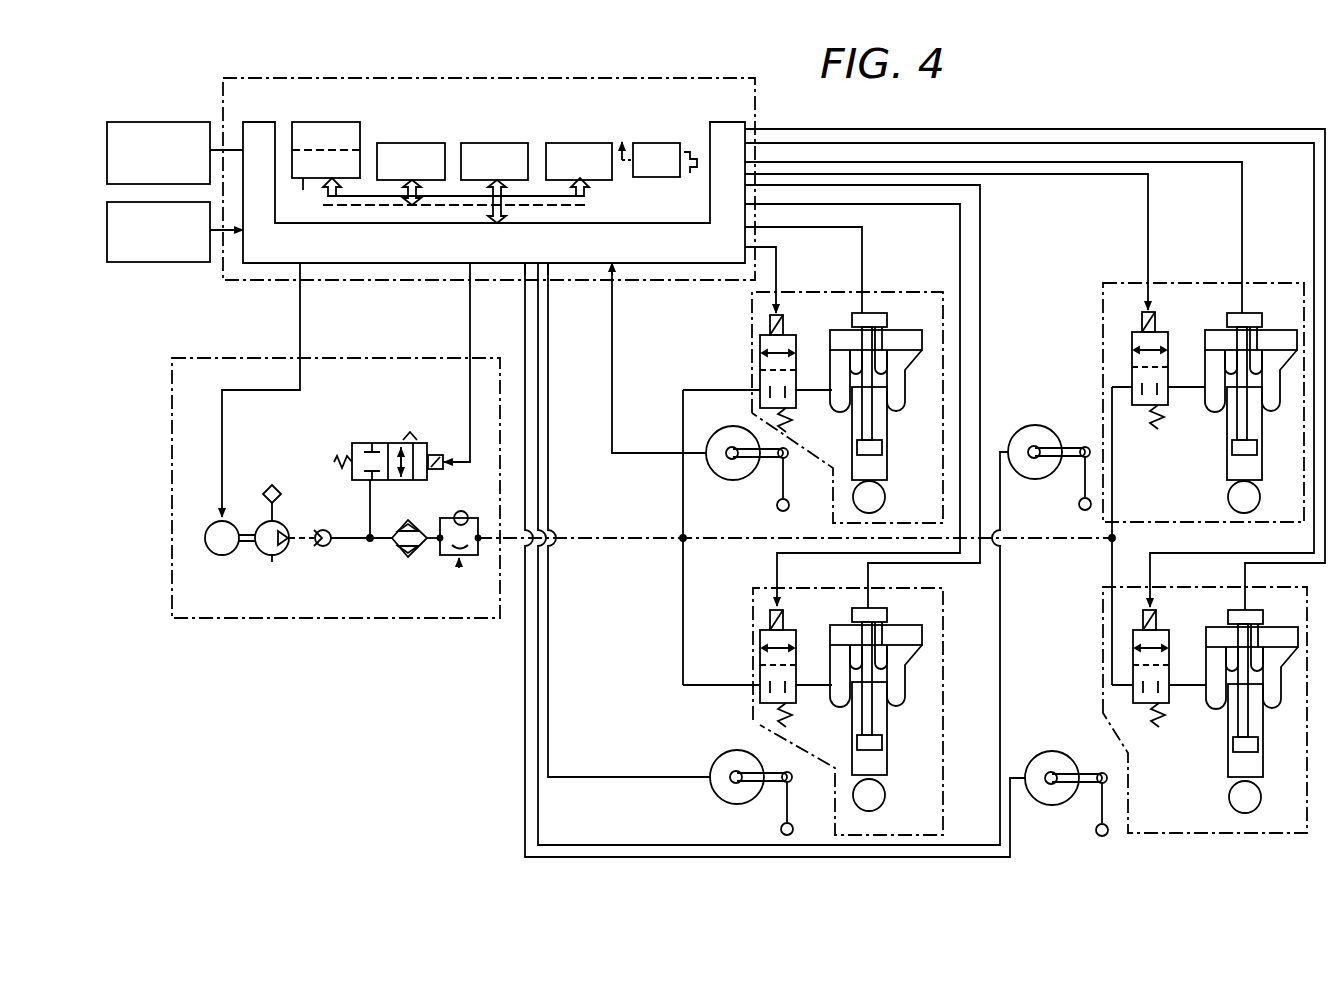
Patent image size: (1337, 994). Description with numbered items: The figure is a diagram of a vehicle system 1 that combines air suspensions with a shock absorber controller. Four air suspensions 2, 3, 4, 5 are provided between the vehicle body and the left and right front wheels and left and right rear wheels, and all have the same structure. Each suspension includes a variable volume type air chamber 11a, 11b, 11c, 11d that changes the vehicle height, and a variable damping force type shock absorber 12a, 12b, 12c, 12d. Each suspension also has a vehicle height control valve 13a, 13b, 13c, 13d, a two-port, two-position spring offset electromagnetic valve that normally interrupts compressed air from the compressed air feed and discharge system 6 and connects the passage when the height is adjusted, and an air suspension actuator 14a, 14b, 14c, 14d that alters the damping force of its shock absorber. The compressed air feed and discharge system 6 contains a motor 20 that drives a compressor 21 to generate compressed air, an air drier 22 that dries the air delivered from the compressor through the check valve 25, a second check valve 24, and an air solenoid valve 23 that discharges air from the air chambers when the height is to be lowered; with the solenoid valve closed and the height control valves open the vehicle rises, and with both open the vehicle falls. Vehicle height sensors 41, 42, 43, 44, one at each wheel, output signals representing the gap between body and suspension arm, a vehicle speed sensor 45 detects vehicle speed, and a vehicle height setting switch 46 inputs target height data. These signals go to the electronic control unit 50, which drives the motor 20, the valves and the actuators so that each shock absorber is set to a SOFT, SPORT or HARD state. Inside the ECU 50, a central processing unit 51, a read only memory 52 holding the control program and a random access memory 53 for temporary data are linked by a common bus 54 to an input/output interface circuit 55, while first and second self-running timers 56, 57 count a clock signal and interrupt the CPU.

The anti-skid brake control system 1 is at (1082, 124).
The air suspension 2 is at (908, 292).
The air suspension 3 is at (946, 628).
The air suspension 4 is at (1120, 283).
The air suspension 5 is at (1100, 630).
The compressed air feed and discharge system 6 is at (252, 356).
The variable volume type air chamber 11a is at (892, 415).
The air chamber 11b is at (892, 710).
The air chamber 11c is at (1275, 412).
The air chamber 11d is at (1270, 712).
The variable damping force type shock absorber 12a is at (889, 466).
The shock absorber 12b is at (889, 765).
The shock absorber 12c is at (1263, 468).
The shock absorber 12d is at (1264, 766).
The vehicle height control valve 13a is at (782, 328).
The vehicle height control valve 13b is at (784, 623).
The vehicle height control valve 13c is at (1145, 314).
The vehicle height control valve 13d is at (1160, 618).
The air suspension actuator 14a is at (898, 312).
The air suspension actuator 14b is at (898, 608).
The air suspension actuator 14c is at (1265, 322).
The air suspension actuator 14d is at (1265, 618).
The motor 20 is at (223, 556).
The compressor 21 is at (272, 539).
The air drier 22 is at (392, 553).
The air solenoid valve 23 is at (381, 443).
The check valve 24 is at (459, 554).
The check valve 25 is at (323, 550).
The vehicle height sensor 41 is at (716, 430).
The vehicle height sensor 42 is at (728, 751).
The vehicle height sensor 43 is at (1050, 426).
The vehicle height sensor 44 is at (1053, 751).
The vehicle speed sensor 45 is at (150, 121).
The vehicle height setting switch 46 is at (158, 263).
The electronic control unit 50 is at (263, 283).
The central processing unit 51 is at (575, 143).
The read only memory 52 is at (498, 143).
The random access memory 53 is at (416, 135).
The common bus 54 is at (588, 204).
The input/output interface circuit 55 is at (641, 228).
The first timer 56 is at (323, 190).
The second timer 57 is at (334, 120).